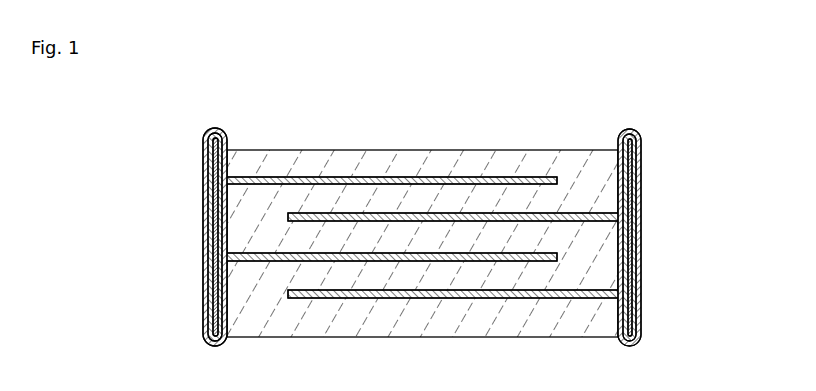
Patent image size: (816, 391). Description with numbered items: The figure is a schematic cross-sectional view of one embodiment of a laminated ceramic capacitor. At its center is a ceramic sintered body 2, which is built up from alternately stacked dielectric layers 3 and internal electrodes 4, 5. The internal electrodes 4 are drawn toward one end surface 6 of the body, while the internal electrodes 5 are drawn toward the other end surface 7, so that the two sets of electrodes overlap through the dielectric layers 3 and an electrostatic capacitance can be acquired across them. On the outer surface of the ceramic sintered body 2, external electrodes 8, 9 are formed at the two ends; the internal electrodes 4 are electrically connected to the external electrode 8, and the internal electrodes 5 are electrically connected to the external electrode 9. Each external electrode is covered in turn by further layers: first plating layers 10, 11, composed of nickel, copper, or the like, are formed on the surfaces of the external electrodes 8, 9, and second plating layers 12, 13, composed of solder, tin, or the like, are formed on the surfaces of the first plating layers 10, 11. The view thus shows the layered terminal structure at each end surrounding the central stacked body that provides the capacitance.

The ceramic sintered body 2 is at (507, 148).
The dielectric layers 3 is at (446, 200).
The internal electrodes 4 is at (335, 252).
The internal electrodes 5 is at (578, 222).
The one end surface 6 is at (208, 212).
The other end surface 7 is at (622, 210).
The external electrode 8 is at (207, 172).
The external electrode 9 is at (640, 165).
The first plating layer 10 is at (207, 268).
The first plating layer 11 is at (641, 268).
The second plating layer 12 is at (206, 318).
The second plating layer 13 is at (634, 316).